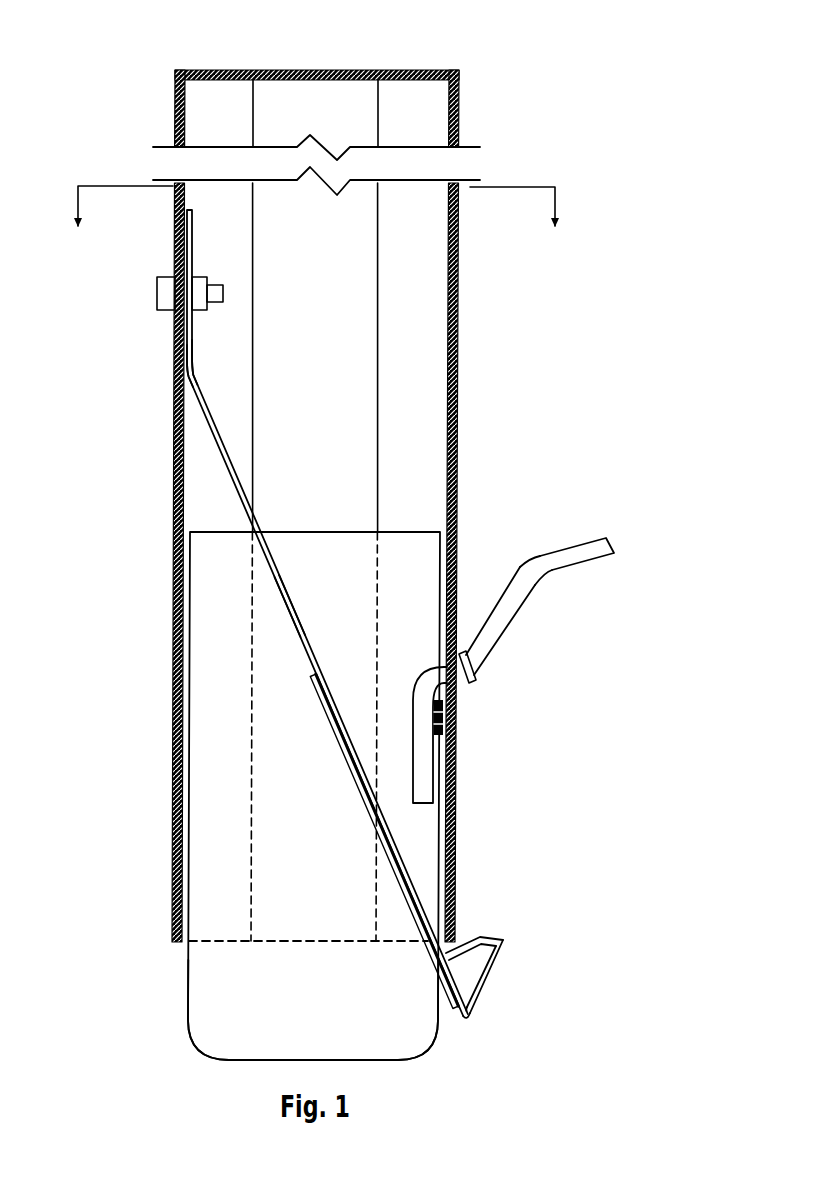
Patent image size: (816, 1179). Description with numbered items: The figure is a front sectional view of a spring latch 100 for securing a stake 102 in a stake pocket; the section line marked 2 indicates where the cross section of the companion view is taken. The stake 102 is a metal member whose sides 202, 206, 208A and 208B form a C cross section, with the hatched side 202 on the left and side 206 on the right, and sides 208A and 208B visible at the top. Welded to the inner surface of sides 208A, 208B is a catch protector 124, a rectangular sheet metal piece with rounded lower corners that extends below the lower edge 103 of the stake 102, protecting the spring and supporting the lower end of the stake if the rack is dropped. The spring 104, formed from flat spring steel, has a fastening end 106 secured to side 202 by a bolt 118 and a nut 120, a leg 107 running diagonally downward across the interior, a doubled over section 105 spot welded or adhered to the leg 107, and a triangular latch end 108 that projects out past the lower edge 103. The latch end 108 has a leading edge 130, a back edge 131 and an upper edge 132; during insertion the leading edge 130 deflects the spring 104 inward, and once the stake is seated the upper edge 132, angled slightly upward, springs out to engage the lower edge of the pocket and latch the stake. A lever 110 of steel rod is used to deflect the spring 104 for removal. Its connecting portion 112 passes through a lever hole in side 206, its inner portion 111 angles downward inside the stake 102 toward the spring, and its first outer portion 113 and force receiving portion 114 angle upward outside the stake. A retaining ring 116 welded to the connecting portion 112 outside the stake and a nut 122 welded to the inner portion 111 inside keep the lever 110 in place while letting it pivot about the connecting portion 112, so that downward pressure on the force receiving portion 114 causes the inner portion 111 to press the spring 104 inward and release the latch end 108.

The spring latch 100 is at (264, 796).
The stake 102 is at (338, 488).
The lower edge 103 is at (188, 941).
The spring 104 is at (327, 613).
The doubled over section 105 is at (326, 717).
The fastening end 106 is at (190, 362).
The leg 107 is at (299, 616).
The latch end 108 is at (518, 966).
The lever 110 is at (568, 608).
The inner portion 111 is at (475, 746).
The connecting portion 112 is at (476, 652).
The first outer portion 113 is at (514, 588).
The force receiving portion 114 is at (553, 558).
The retaining ring 116 is at (472, 682).
The bolt 118 is at (163, 287).
The nut 120 is at (197, 277).
The nut 122 is at (442, 733).
The catch protector 124 is at (188, 988).
The leading edge 130 is at (497, 963).
The back edge 131 is at (465, 1016).
The upper edge 132 is at (482, 937).
The side 202 is at (176, 397).
The side 206 is at (458, 363).
The side 208A is at (213, 98).
The side 208B is at (398, 98).
The section line 2- 2 is at (316, 206).